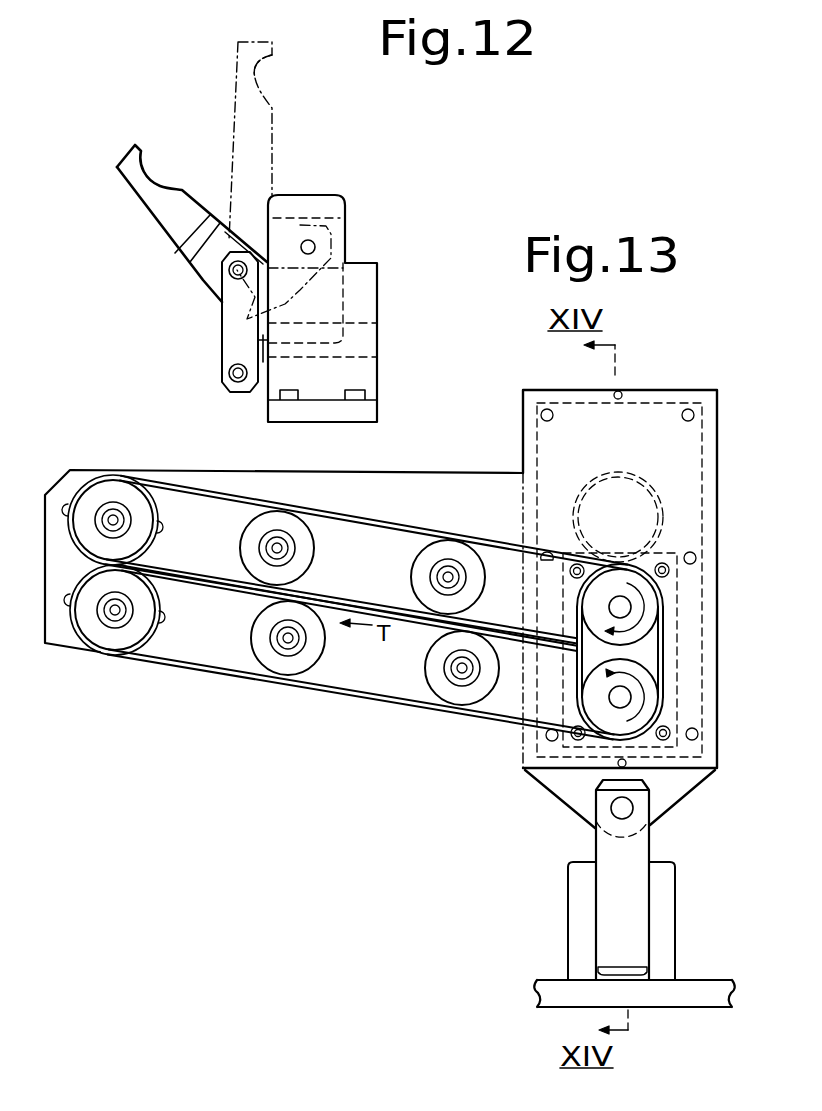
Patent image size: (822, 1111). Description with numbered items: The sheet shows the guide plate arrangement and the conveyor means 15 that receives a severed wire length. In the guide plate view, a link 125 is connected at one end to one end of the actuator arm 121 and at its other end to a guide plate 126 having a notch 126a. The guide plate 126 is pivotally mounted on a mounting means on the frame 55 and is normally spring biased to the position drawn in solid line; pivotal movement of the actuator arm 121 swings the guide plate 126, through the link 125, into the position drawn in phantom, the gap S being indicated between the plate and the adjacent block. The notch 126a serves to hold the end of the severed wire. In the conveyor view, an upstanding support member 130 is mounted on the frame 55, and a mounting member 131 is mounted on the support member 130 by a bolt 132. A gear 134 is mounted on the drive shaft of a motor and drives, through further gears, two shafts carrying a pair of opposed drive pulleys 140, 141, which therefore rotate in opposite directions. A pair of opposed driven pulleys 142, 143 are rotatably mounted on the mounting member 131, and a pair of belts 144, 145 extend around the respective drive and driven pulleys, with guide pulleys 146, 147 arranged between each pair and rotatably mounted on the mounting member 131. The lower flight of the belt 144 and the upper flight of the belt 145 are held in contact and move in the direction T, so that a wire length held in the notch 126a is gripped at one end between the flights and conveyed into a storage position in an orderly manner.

In FIG. 12, the actuator arm 121 is at (223, 384).
In FIG. 12, the link 125 is at (225, 350).
In FIG. 12, the guide plate 126 is at (167, 222).
In FIG. 12, the notch 126a is at (155, 180).
In FIG. 12, the gap S is at (264, 340).
In FIG. 13, the conveyor means 15 is at (469, 474).
In FIG. 13, the mounting member 131 is at (693, 478).
In FIG. 13, the gear 134 is at (618, 488).
In FIG. 13, the driven pulley 142 is at (110, 490).
In FIG. 13, the driven pulley 143 is at (105, 638).
In FIG. 13, the belt 144 is at (218, 492).
In FIG. 13, the belt 145 is at (188, 663).
In FIG. 13, the guide pulley 146 is at (442, 543).
In FIG. 13, the guide pulley 147 is at (280, 668).
In FIG. 13, the drive pulley 140 is at (652, 608).
In FIG. 13, the drive pulley 141 is at (652, 698).
In FIG. 13, the support member 130 is at (643, 848).
In FIG. 13, the bolt 132 is at (633, 807).
In FIG. 13, the frame 55 is at (707, 987).